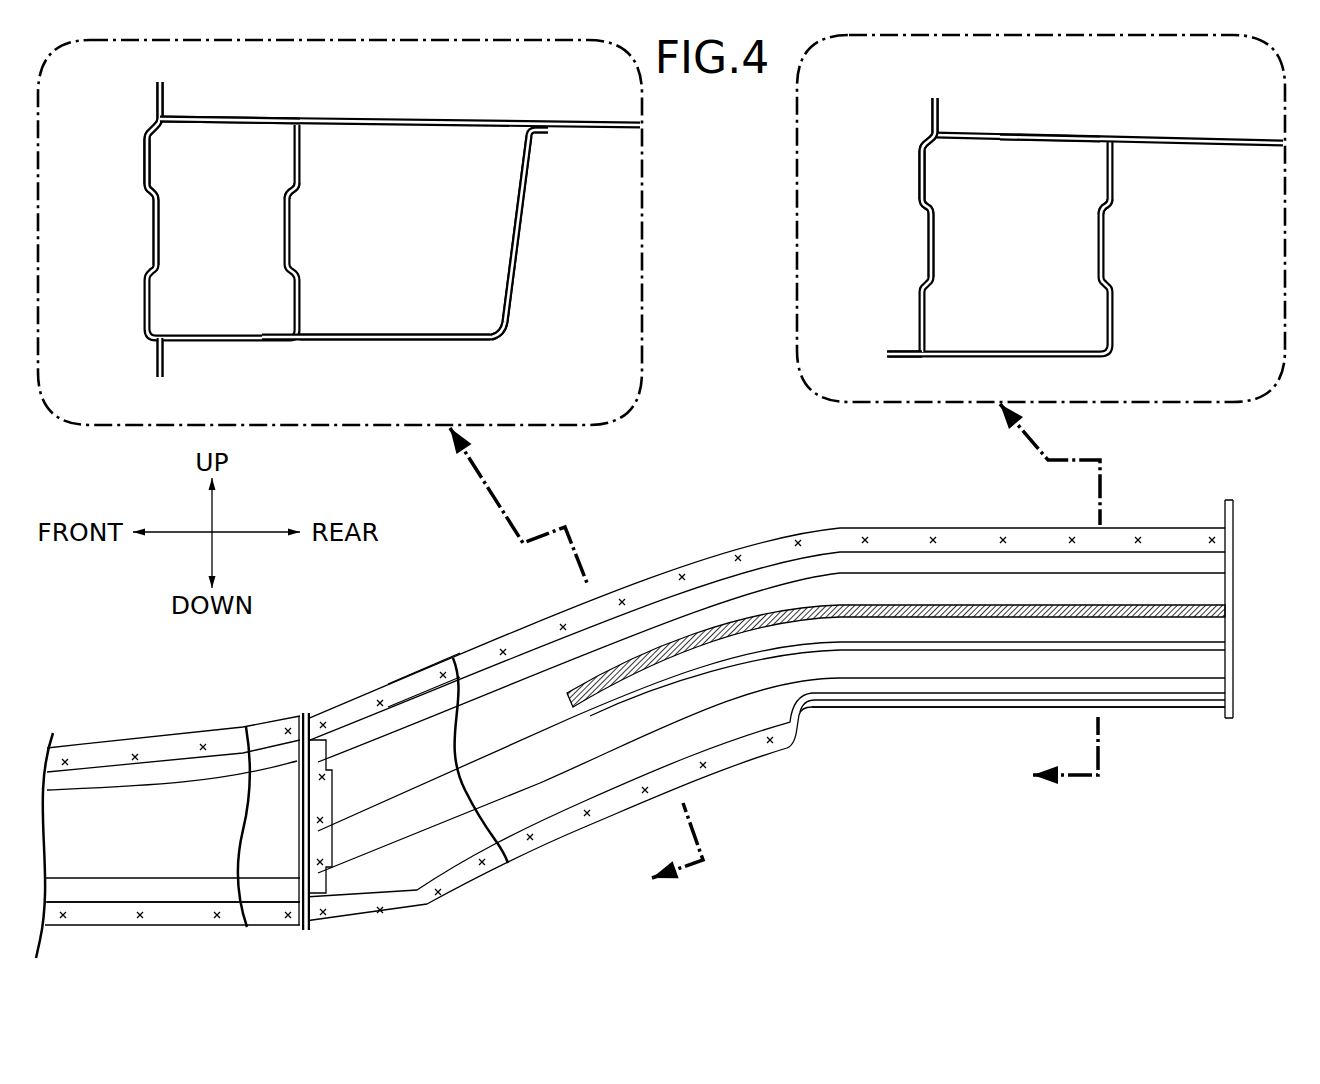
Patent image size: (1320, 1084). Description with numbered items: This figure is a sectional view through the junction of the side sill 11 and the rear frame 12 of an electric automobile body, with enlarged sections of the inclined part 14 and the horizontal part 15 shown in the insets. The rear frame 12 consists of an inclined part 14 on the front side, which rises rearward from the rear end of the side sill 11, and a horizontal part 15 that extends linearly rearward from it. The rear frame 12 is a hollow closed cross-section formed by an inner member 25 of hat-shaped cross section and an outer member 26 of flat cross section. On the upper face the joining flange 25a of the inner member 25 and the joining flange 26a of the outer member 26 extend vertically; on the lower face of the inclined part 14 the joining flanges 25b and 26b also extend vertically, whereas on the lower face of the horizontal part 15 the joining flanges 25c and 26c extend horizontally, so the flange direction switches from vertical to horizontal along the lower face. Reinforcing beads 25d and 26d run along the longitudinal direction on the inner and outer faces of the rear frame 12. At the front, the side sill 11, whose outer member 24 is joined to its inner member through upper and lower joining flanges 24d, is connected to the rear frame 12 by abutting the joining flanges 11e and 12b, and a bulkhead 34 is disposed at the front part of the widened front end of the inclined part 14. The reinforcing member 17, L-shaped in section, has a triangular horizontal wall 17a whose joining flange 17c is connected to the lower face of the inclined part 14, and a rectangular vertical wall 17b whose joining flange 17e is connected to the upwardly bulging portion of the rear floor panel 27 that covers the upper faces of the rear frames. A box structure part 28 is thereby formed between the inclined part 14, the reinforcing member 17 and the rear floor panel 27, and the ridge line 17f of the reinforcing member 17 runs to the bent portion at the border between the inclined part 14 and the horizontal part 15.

The side sill 11 is at (130, 722).
The joining flange 11e is at (300, 716).
The rear frame 12 is at (120, 172).
The joining flange 12b is at (306, 712).
The inclined part 14 is at (228, 110).
The horizontal part 15 is at (1038, 125).
The reinforcing member 17 is at (517, 247).
The horizontal wall 17a is at (356, 342).
The vertical wall 17b is at (528, 193).
The joining flange 17c is at (264, 342).
The joining flange 17e is at (548, 134).
The ridge line 17f is at (506, 337).
The outer member 24 is at (100, 932).
The joining flanges 24d is at (190, 750).
The inner member 25 is at (302, 205).
The joining flange 25a is at (166, 104).
The joining flange 25b is at (165, 360).
The joining flange 25c is at (908, 357).
The reinforcing bead 25d is at (295, 230).
The outer member 26 is at (148, 205).
The joining flange 26a is at (158, 98).
The joining flange 26b is at (160, 362).
The joining flange 26c is at (898, 352).
The reinforcing bead 26d is at (155, 245).
The rear floor panel 27 is at (440, 120).
The box structure part 28 is at (409, 230).
The bulkhead 34 is at (335, 800).